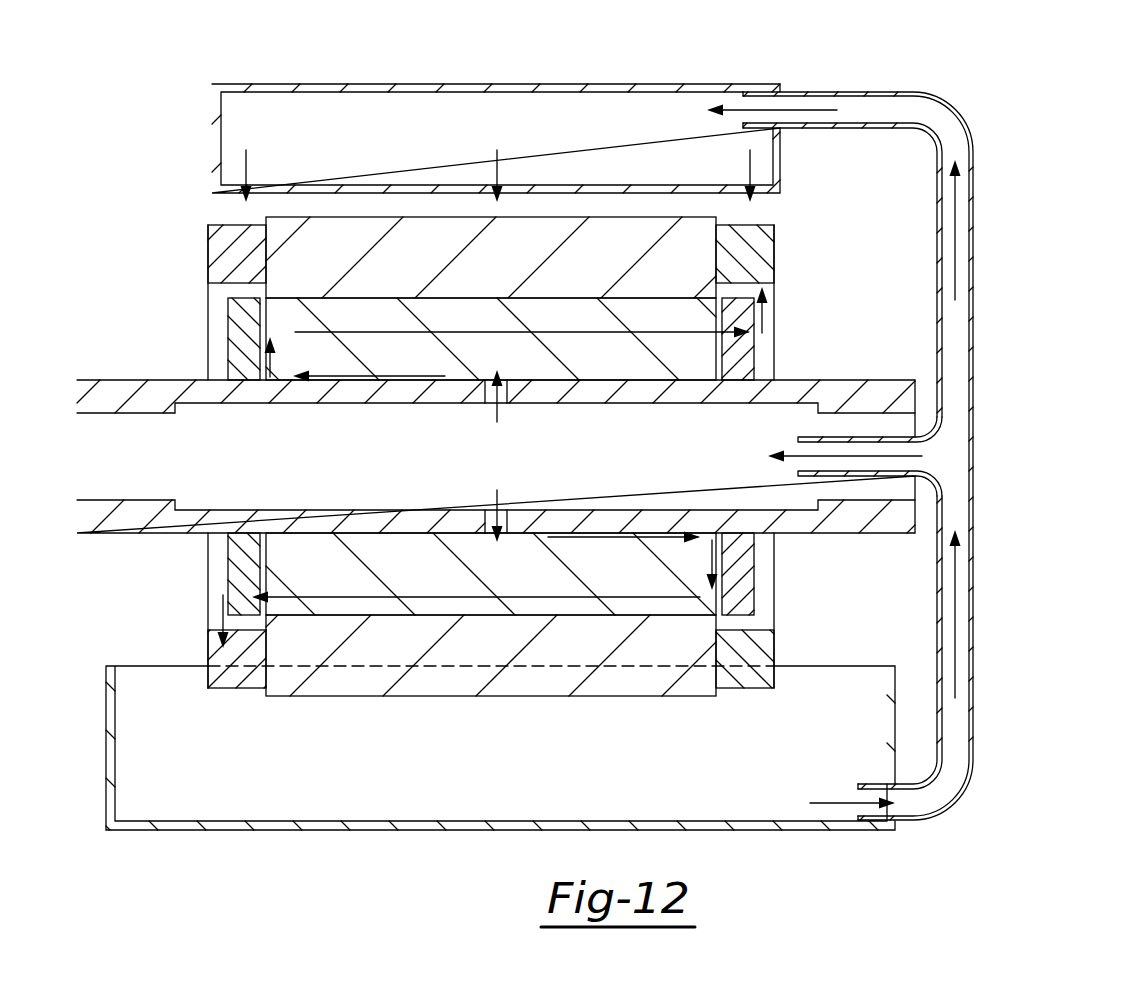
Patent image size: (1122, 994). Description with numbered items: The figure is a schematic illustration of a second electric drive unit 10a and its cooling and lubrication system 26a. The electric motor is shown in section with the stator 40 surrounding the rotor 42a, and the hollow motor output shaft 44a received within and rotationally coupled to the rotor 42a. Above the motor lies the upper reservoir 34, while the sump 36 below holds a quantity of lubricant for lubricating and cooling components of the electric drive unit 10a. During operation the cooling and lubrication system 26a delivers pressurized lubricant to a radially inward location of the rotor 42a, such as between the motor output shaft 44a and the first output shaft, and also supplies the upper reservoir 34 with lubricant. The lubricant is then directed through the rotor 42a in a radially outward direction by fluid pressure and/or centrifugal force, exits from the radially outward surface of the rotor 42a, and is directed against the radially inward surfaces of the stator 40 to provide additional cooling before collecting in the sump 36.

The electric drive unit 10a is at (906, 63).
The cooling and lubrication system 26a is at (976, 560).
The upper reservoir 34 is at (372, 133).
The sump 36 is at (269, 765).
The stator 40 is at (747, 647).
The rotor 42a is at (218, 328).
The motor output shaft 44a is at (882, 398).